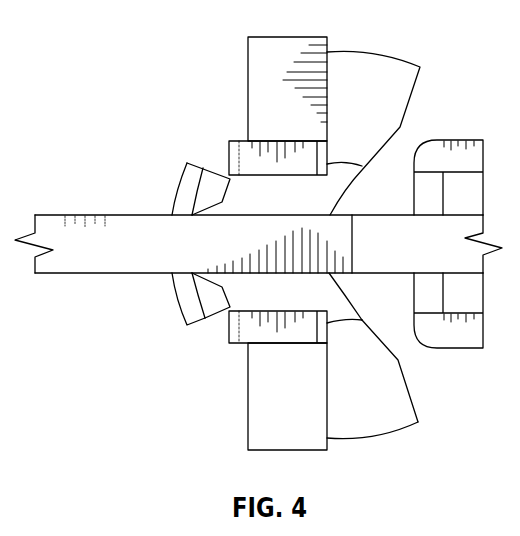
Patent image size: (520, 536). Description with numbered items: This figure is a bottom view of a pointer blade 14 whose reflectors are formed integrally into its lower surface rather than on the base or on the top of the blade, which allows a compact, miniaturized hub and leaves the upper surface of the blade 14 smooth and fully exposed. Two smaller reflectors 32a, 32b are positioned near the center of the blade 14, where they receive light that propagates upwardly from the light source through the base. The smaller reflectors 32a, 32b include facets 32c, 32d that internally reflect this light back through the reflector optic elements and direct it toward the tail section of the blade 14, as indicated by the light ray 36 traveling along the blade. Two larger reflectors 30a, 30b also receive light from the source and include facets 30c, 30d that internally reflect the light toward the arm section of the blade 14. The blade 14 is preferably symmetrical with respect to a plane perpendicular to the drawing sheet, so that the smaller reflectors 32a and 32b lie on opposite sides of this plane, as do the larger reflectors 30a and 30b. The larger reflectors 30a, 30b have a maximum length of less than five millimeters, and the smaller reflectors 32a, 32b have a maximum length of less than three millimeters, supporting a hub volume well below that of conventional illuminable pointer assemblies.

The blade 14 is at (108, 124).
The larger reflector 30a is at (388, 400).
The larger reflector 30b is at (392, 99).
The facet 30c is at (355, 417).
The facet 30d is at (365, 350).
The smaller reflector 32a is at (190, 316).
The smaller reflector 32b is at (207, 192).
The facet 32c is at (187, 293).
The facet 32d is at (218, 307).
The light ray 36 is at (93, 255).